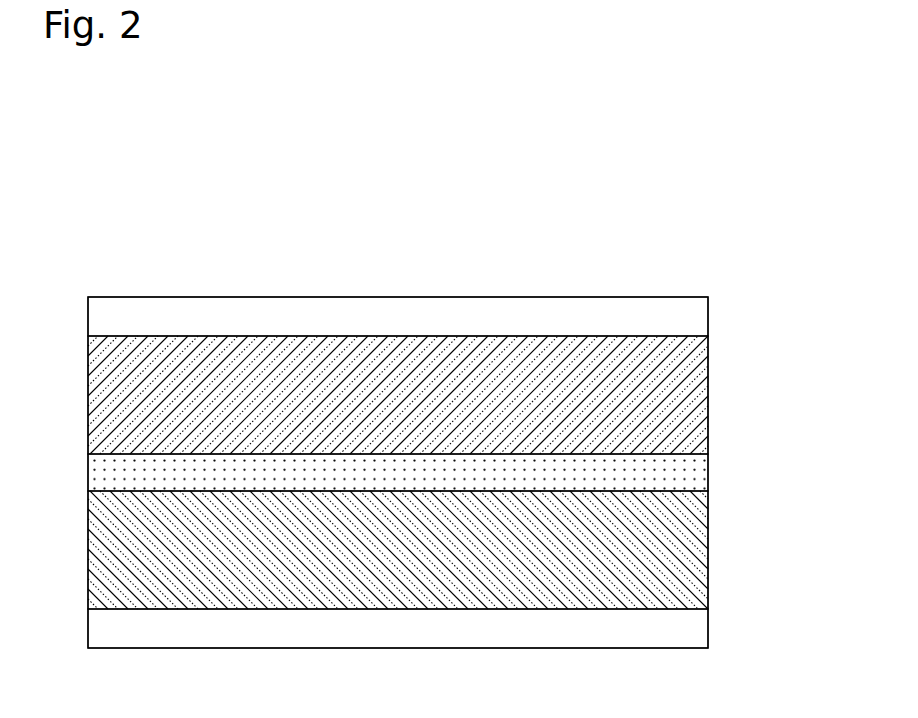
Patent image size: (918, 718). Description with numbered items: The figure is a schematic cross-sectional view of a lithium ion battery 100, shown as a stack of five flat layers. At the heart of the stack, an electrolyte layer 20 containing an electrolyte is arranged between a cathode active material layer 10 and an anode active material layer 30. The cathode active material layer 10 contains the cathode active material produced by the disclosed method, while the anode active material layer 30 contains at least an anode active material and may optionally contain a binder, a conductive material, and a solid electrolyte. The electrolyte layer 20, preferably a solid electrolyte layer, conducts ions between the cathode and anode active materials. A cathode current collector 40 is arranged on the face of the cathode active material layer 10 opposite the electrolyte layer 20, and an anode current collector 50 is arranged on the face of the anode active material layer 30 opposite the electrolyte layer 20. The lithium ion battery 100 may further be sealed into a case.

The lithium ion battery 100 is at (409, 212).
The cathode current collector 40 is at (708, 318).
The cathode active material layer 10 is at (708, 402).
The electrolyte layer 20 is at (708, 470).
The anode active material layer 30 is at (708, 555).
The anode current collector 50 is at (708, 630).